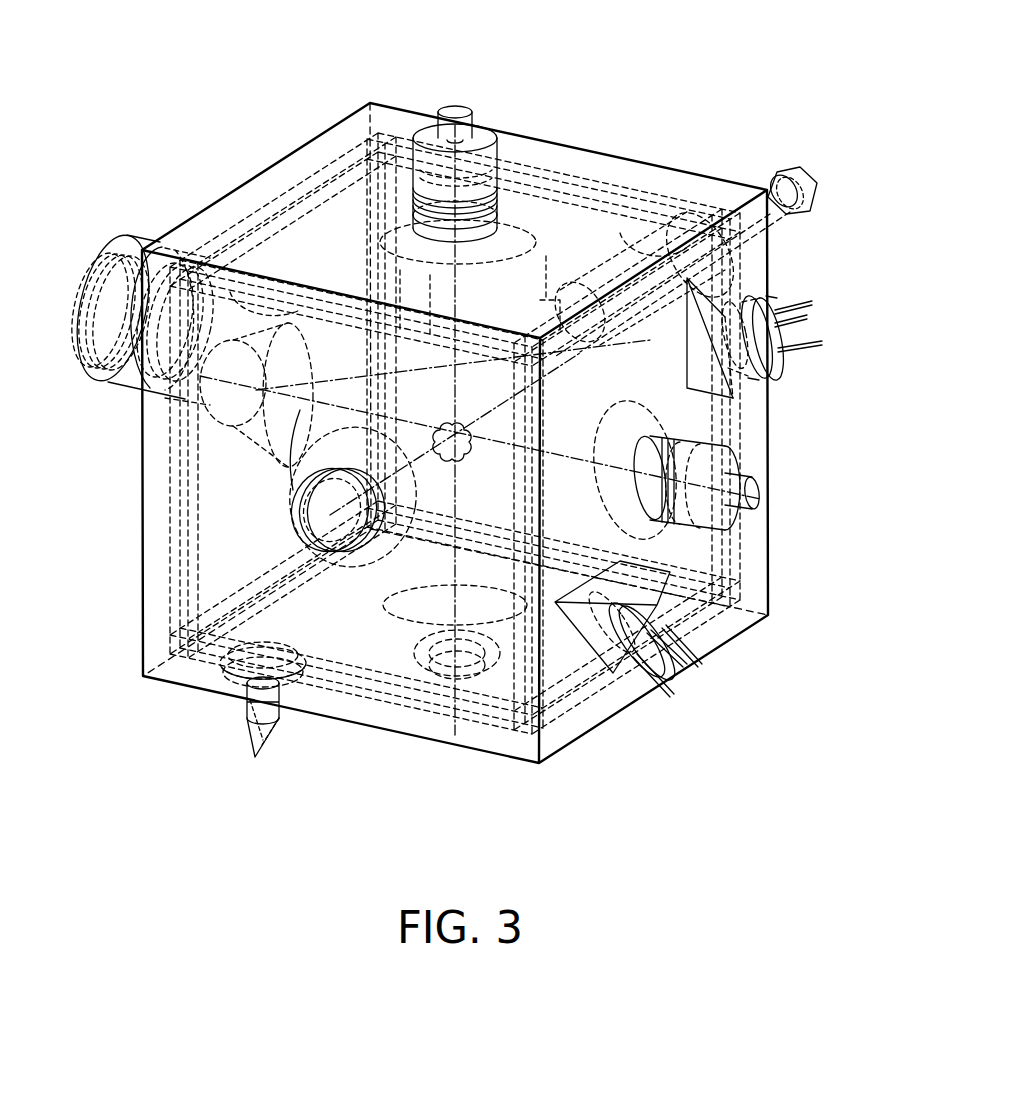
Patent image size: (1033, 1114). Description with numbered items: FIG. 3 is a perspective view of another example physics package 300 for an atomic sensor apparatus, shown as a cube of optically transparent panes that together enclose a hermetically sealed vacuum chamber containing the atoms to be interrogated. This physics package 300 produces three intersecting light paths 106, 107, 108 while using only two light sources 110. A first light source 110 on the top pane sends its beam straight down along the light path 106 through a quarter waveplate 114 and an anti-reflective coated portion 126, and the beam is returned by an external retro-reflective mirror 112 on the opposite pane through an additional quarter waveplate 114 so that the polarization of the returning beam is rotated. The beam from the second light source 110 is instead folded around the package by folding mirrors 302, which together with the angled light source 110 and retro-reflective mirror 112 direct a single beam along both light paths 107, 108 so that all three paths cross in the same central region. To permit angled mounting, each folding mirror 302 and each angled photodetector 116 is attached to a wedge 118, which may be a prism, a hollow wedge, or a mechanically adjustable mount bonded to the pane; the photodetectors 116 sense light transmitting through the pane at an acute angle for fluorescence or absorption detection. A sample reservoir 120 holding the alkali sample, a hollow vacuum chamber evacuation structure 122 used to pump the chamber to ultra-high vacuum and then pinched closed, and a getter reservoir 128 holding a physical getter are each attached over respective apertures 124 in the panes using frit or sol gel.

The physics package 300 is at (712, 62).
The light path 106 is at (470, 318).
The light path 107 is at (483, 417).
The light path 108 is at (483, 443).
The light source 110 is at (482, 135).
The retro-reflective mirror 112 is at (300, 513).
The quarter waveplate 114 is at (527, 242).
The photodetector 116 is at (800, 352).
The wedge 118 is at (745, 300).
The sample reservoir 120 is at (818, 176).
The vacuum chamber evacuation structure 122 is at (270, 742).
The aperture 124 is at (660, 233).
The anti-reflective coated portion 126 is at (522, 252).
The getter reservoir 128 is at (97, 272).
The folding mirror 302 is at (582, 308).